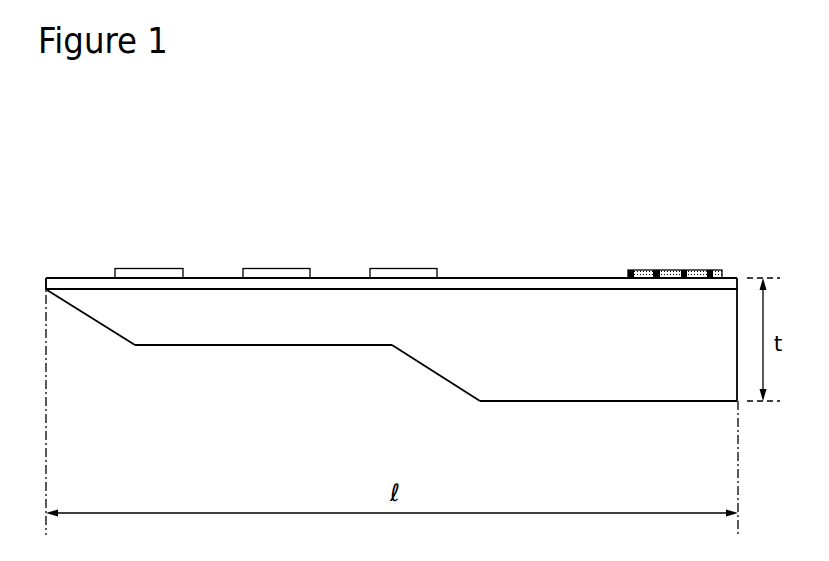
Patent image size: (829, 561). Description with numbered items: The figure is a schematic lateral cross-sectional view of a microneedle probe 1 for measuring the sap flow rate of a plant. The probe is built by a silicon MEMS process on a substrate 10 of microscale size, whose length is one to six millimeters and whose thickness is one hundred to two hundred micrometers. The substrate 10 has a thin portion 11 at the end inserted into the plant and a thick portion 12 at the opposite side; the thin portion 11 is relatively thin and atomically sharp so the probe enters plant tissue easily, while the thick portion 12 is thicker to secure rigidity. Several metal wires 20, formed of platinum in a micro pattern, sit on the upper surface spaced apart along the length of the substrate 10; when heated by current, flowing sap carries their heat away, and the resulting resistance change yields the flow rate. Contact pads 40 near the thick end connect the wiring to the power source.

The microneedle probe device 1 is at (398, 158).
The substrate 10 is at (383, 415).
The thin portion 11 is at (273, 330).
The thick portion 12 is at (441, 351).
The metal wire 20 is at (263, 267).
The contact pad 40 is at (669, 268).